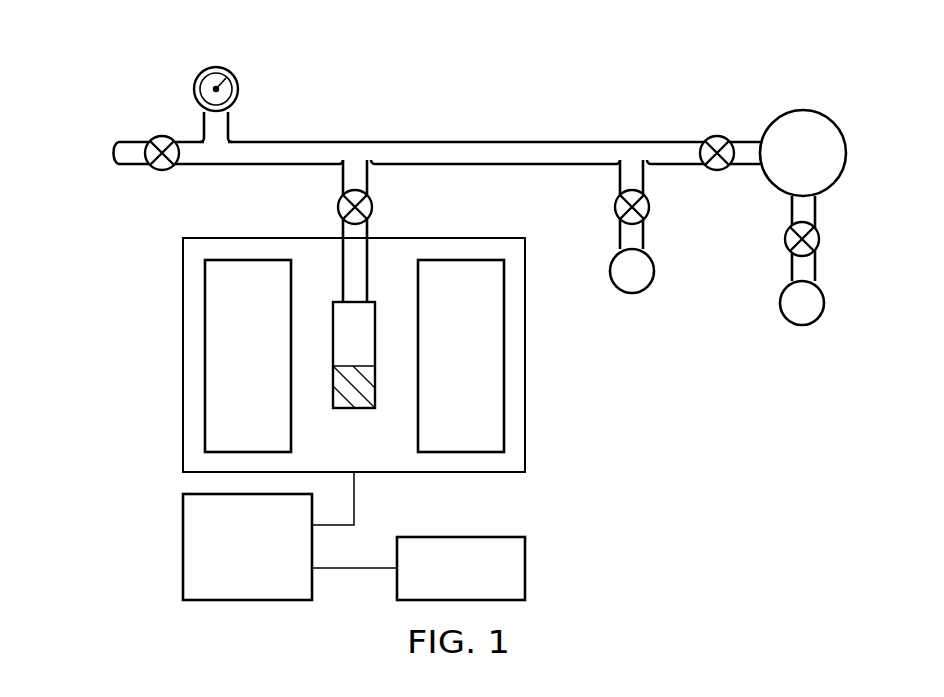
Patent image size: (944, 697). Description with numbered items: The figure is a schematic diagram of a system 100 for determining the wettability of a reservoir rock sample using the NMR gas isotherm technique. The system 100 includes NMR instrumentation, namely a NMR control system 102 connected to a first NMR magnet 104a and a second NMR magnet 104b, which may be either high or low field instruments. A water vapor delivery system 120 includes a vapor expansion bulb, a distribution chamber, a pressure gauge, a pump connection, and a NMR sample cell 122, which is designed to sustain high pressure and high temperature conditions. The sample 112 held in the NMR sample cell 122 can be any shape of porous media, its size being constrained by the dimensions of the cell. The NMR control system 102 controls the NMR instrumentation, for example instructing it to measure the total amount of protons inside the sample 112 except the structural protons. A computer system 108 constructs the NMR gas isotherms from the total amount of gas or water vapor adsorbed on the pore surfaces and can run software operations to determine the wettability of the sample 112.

The system 100 is at (626, 65).
The NMR control system 102 is at (183, 548).
The first NMR magnet 104a is at (222, 372).
The second NMR magnet 104b is at (435, 372).
The computer system 108 is at (525, 580).
The sample 112 is at (358, 402).
The water vapor delivery system 120 is at (137, 75).
The NMR sample cell 122 is at (343, 324).